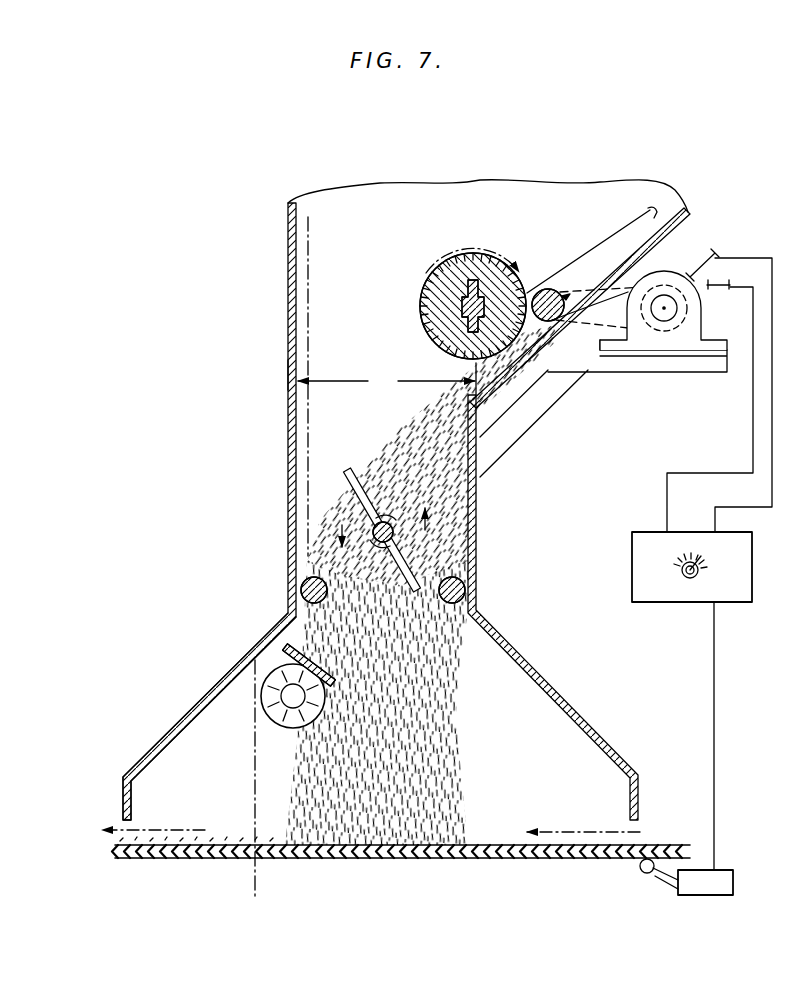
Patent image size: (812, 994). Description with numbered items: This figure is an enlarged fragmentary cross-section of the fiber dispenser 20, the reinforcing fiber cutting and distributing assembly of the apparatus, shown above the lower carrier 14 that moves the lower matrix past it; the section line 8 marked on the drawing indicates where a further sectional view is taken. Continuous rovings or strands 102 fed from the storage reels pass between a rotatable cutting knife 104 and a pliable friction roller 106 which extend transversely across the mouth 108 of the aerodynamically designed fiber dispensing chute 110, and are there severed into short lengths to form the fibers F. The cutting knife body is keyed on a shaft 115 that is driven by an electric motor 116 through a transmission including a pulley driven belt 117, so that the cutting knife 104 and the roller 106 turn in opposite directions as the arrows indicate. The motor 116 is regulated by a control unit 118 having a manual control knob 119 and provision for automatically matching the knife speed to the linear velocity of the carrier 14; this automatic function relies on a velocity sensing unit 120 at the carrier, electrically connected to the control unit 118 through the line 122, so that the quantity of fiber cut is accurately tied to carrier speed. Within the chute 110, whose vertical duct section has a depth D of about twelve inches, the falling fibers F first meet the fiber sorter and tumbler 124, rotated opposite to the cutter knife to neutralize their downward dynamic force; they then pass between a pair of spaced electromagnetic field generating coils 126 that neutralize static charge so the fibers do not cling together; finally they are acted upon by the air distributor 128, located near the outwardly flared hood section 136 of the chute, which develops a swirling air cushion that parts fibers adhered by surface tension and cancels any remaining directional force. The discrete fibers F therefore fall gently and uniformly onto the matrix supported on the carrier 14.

The mouth 108 is at (405, 197).
The cutting knife 104 is at (461, 278).
The shaft 115 is at (462, 305).
The friction roller 106 is at (548, 290).
The strands 102 is at (597, 247).
The pulley driven belt 117 is at (701, 271).
The electric motor 116 is at (678, 306).
The fiber dispenser 20 is at (268, 375).
The fiber dispensing chute 110 is at (287, 492).
The hood section 136 is at (172, 727).
The fiber sorter and tumbler 124 is at (353, 505).
The electromagnetic field generating coils 126 is at (302, 585).
The air distributor 128 is at (269, 661).
The control unit 118 is at (738, 561).
The manual control knob 119 is at (686, 578).
The line 122 is at (716, 678).
The velocity sensing unit 120 is at (722, 876).
The lower carrier 14 is at (481, 860).
The fibers F is at (442, 782).
The depth D is at (386, 384).
The section line 8 is at (275, 237).